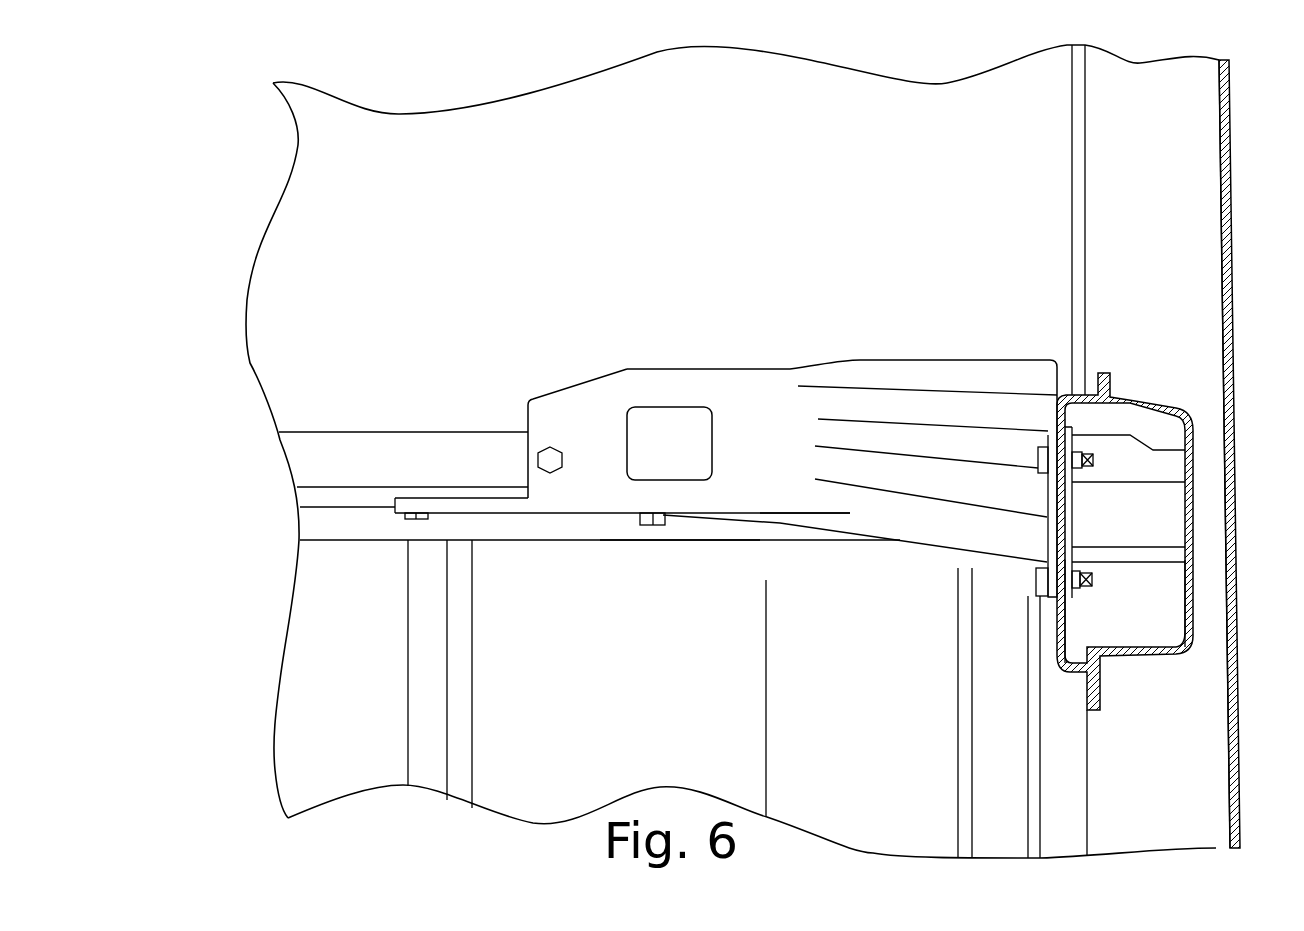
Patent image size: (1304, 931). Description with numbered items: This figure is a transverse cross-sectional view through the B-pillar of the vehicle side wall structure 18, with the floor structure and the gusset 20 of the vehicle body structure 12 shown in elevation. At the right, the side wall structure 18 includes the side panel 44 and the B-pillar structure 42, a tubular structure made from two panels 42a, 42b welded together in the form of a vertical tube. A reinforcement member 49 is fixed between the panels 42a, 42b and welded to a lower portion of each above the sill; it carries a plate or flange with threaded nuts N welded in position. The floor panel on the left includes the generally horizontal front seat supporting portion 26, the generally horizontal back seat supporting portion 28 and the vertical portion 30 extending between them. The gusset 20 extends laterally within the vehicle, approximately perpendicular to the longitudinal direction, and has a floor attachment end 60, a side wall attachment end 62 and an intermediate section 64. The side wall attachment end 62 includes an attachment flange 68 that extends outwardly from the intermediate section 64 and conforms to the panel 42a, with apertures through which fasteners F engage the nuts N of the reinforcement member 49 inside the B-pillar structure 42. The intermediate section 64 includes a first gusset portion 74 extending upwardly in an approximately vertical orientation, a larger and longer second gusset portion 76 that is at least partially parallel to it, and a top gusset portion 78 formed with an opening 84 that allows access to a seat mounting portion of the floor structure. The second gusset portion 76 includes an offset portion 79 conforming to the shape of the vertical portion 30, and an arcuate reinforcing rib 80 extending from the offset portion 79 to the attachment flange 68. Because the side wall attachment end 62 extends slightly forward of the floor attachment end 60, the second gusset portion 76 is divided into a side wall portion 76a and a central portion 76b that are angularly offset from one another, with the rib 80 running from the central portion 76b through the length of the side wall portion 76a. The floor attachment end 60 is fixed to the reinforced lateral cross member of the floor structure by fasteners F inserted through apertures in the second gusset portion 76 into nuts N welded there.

The vehicle body structure 12 is at (256, 178).
The vehicle side wall structure 18 is at (1240, 103).
The gusset 20 is at (791, 352).
The front seat supporting portion 26 is at (523, 772).
The back seat supporting portion 28 is at (302, 335).
The vertical portion 30 is at (360, 498).
The B-pillar structure 42 is at (1157, 620).
The panel 42a is at (1067, 640).
The panel 42b is at (1184, 640).
The side panel 44 is at (1231, 183).
The reinforcement member 49 is at (1163, 506).
The floor attachment end 60 is at (532, 403).
The side wall attachment end 62 is at (1050, 430).
The intermediate section 64 is at (771, 408).
The attachment flange 68 is at (1047, 531).
The first gusset portion 74 is at (995, 373).
The second gusset portion 76 is at (663, 643).
The side wall portion 76a is at (843, 523).
The central portion 76b is at (692, 550).
The top gusset portion 78 is at (905, 445).
The offset portion 79 is at (724, 699).
The reinforcing rib 80 is at (887, 533).
The opening 84 is at (670, 414).
The fastener F is at (552, 450).
The nut N is at (1092, 452).